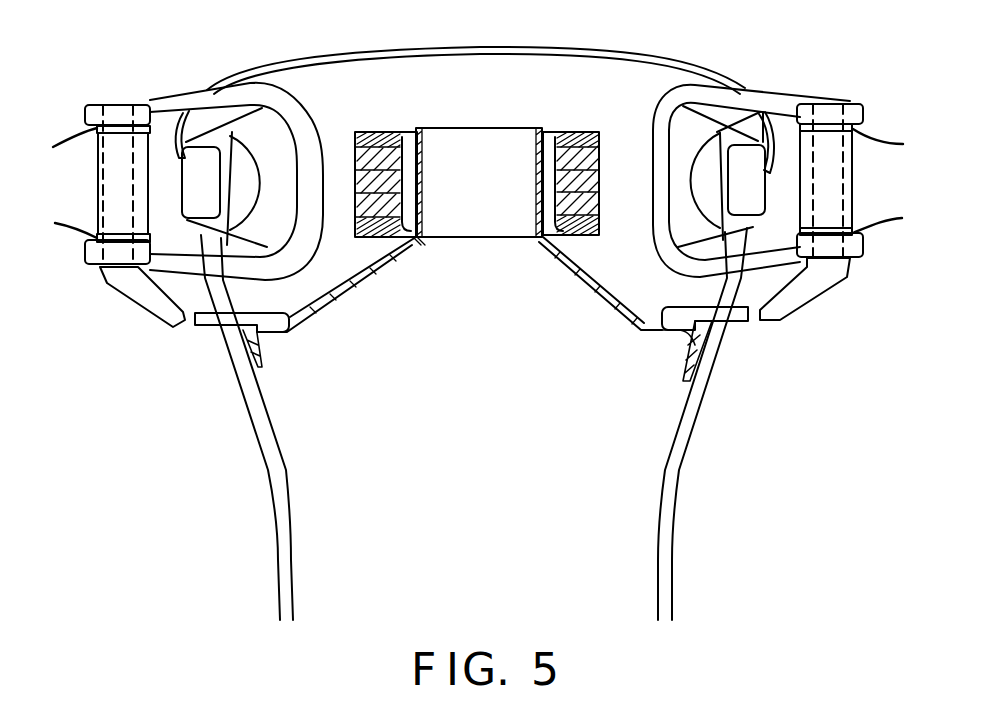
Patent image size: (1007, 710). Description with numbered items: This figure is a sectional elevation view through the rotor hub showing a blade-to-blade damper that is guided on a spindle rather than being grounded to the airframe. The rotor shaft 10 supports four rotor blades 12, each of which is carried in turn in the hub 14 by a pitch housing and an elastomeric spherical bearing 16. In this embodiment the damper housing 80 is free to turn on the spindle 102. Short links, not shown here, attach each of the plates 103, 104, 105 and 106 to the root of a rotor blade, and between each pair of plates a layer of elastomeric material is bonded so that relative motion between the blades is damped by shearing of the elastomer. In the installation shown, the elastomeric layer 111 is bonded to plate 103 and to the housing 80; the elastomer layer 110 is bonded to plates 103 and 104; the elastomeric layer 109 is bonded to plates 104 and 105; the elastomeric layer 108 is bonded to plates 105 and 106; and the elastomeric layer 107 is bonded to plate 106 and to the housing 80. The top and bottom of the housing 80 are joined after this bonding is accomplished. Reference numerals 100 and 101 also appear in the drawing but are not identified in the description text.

The rotor shaft 10 is at (673, 537).
The rotor blades 12 is at (878, 218).
The hub 14 is at (765, 203).
The elastomeric spherical bearing 16 is at (693, 127).
The damper housing 80 is at (575, 130).
The link member 100 is at (768, 87).
The curved band 101 is at (658, 58).
The spindle 102 is at (580, 277).
The plate 103 is at (355, 217).
The plate 104 is at (355, 193).
The plate 105 is at (355, 172).
The plate 106 is at (355, 148).
The elastomeric layer 107 is at (402, 157).
The elastomeric layer 108 is at (416, 150).
The elastomeric layer 109 is at (410, 180).
The elastomer layer 110 is at (403, 200).
The elastomeric layer 111 is at (415, 240).